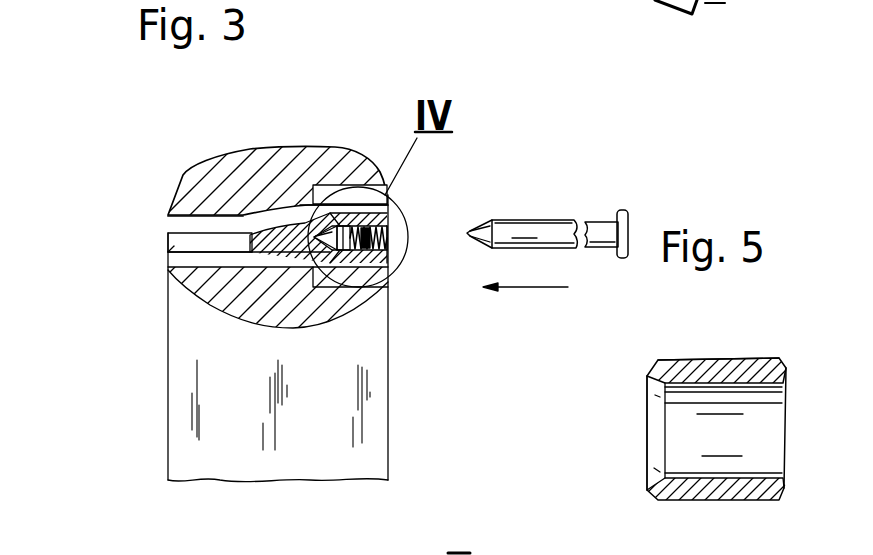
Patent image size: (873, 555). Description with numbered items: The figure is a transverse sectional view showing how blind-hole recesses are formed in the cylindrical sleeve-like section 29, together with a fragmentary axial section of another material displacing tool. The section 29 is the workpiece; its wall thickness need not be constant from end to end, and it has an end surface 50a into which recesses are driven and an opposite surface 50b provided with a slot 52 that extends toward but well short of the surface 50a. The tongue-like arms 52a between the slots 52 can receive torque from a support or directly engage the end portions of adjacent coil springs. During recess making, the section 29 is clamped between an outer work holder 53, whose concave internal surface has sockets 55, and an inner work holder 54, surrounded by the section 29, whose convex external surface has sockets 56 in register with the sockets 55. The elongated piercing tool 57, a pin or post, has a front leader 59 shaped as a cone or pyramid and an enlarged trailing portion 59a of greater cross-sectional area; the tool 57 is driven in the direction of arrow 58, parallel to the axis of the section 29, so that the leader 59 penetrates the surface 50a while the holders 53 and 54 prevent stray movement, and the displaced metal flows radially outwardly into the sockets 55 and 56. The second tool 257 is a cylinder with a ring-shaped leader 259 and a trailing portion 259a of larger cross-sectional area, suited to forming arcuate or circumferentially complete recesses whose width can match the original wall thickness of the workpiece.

In FIG. 3, the section 29 is at (160, 219).
In FIG. 3, the surface 50a is at (388, 215).
In FIG. 3, the surface 50b is at (167, 240).
In FIG. 3, the slot 52 is at (185, 247).
In FIG. 3, the arms 52a is at (240, 253).
In FIG. 3, the outer work holder 53 is at (227, 190).
In FIG. 3, the work holder 54 is at (323, 312).
In FIG. 3, the socket 55 is at (344, 196).
In FIG. 3, the socket 56 is at (362, 275).
In FIG. 3, the material displacing tool 57 is at (530, 230).
In FIG. 3, the arrow 58 is at (545, 289).
In FIG. 3, the leader 59 is at (467, 236).
In FIG. 3, the trailing portion 59a is at (627, 213).
In FIG. 5, the material displacing tool 257 is at (773, 344).
In FIG. 5, the ring-shaped leader 259 is at (658, 368).
In FIG. 5, the trailing portion 259a is at (733, 372).